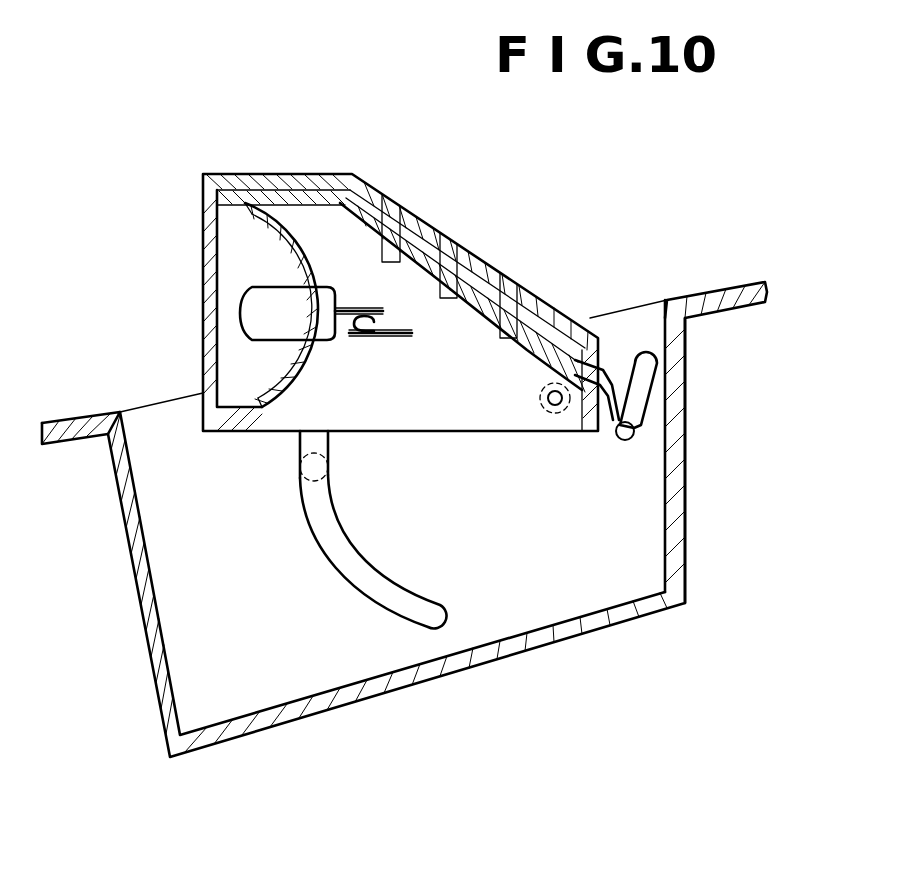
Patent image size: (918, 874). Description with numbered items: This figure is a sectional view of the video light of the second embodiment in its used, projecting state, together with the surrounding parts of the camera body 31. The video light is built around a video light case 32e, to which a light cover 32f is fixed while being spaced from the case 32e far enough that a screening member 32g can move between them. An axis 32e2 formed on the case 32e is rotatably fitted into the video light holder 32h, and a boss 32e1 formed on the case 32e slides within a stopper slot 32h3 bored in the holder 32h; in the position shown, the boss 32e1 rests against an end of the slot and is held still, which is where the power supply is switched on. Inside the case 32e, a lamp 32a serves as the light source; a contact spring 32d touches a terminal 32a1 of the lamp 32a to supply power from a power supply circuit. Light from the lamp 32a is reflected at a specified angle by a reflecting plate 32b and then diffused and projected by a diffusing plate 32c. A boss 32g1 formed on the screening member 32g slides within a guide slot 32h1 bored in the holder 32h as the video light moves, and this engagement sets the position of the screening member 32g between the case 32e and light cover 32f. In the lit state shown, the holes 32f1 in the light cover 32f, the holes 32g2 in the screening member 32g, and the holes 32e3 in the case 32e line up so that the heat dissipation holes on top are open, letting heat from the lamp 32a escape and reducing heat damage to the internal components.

The camera body 31 is at (73, 423).
The lamp 32a is at (246, 312).
The terminal 32a1 is at (343, 341).
The reflecting plate 32b is at (283, 206).
The diffusing plate 32c is at (205, 347).
The contact spring 32d is at (405, 338).
The video light case 32e is at (212, 176).
The boss 32e1 is at (302, 478).
The axis 32e2 is at (556, 413).
The holes 32e3 is at (485, 292).
The light cover 32f is at (262, 192).
The holes 32f1 is at (392, 198).
The screening member 32g is at (533, 313).
The boss 32g1 is at (628, 438).
The holes 32g2 is at (417, 215).
The video light holder 32h is at (675, 347).
The guide slot 32h1 is at (645, 387).
The stopper slot 32h3 is at (418, 620).